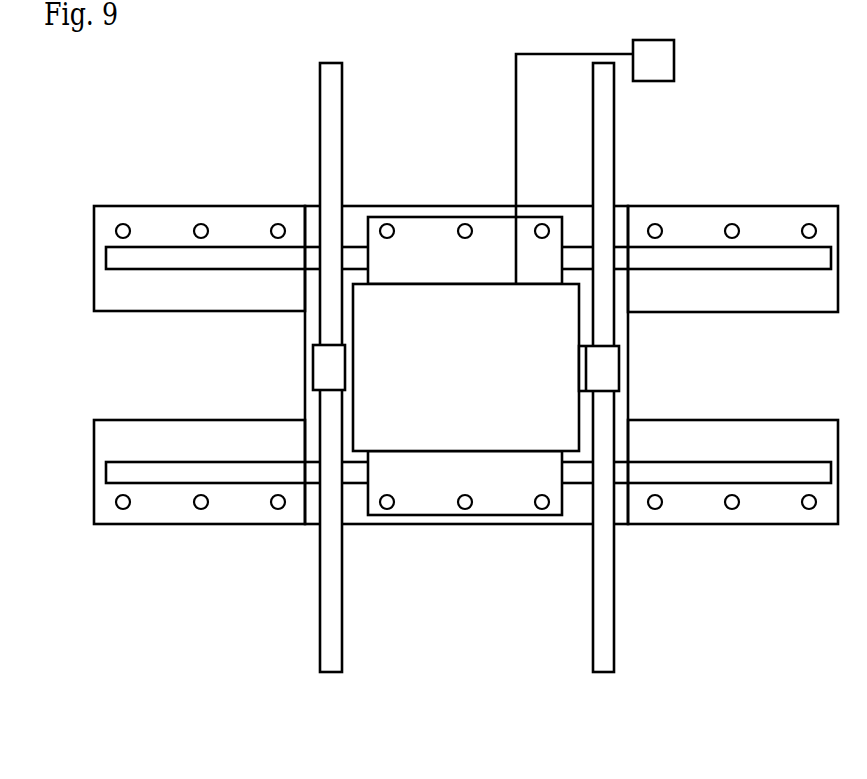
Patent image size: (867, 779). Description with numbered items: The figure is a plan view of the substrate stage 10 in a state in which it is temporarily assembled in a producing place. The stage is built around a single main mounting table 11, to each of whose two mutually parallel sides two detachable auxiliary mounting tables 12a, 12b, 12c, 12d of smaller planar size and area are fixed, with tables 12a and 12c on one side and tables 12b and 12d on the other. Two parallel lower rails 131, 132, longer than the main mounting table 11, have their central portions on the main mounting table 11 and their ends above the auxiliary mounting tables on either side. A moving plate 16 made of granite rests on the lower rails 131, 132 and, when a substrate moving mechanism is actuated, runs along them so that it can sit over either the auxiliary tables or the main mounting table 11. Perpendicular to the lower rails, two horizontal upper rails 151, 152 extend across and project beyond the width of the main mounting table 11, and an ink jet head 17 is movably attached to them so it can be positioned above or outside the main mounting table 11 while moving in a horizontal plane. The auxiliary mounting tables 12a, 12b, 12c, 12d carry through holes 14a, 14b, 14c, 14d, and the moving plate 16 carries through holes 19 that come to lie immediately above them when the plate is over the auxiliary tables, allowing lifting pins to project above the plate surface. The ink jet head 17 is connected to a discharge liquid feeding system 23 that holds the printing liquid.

The substrate stage 10 is at (106, 100).
The main mounting table 11 is at (465, 528).
The auxiliary mounting table 12a is at (653, 210).
The auxiliary mounting table 12b is at (282, 210).
The auxiliary mounting table 12c is at (655, 530).
The auxiliary mounting table 12d is at (278, 522).
The lower rail 131 is at (357, 255).
The lower rail 132 is at (355, 473).
The through holes 14a is at (805, 226).
The through holes 14b is at (274, 226).
The through holes 14c is at (805, 507).
The through holes 14d is at (274, 507).
The upper rail 151 is at (332, 672).
The upper rail 152 is at (605, 672).
The moving plate 16 is at (484, 224).
The ink jet head 17 is at (368, 400).
The through holes 19 is at (537, 236).
The discharge liquid feeding system 23 is at (676, 58).